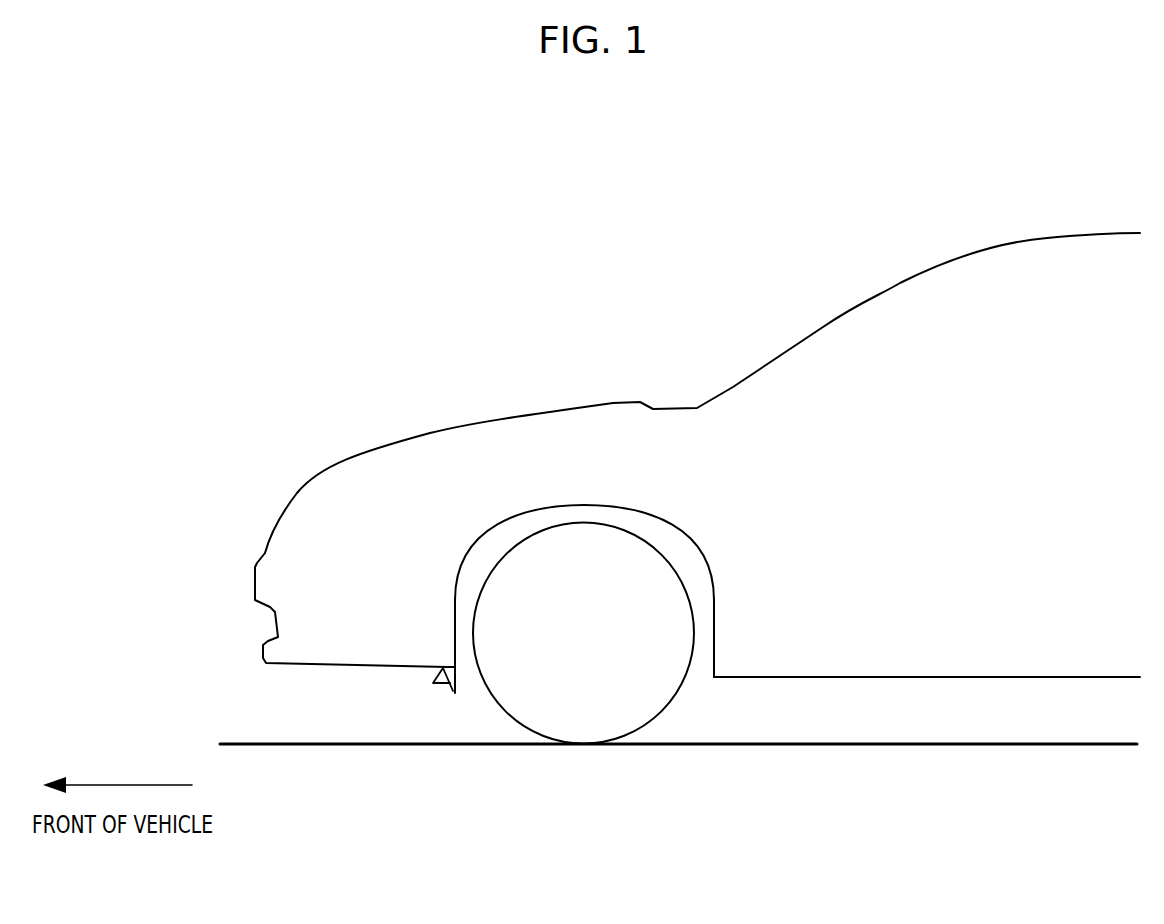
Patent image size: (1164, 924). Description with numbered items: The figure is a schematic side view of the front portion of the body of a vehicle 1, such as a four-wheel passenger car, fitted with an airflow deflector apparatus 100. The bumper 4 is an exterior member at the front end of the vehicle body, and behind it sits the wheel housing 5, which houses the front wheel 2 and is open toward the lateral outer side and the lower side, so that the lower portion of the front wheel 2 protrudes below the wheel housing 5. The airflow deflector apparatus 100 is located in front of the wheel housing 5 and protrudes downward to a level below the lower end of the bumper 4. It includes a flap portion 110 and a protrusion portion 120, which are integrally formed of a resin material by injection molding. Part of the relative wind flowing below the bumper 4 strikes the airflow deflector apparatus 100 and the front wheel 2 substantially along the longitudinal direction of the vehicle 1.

The vehicle 1 is at (295, 238).
The front wheel 2 is at (550, 529).
The bumper 4 is at (310, 608).
The wheel housing 5 is at (683, 710).
The airflow deflector apparatus 100 is at (433, 784).
The flap portion 110 is at (453, 693).
The protrusion portion 120 is at (433, 683).